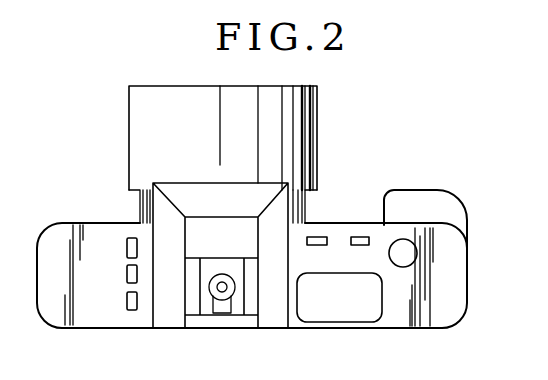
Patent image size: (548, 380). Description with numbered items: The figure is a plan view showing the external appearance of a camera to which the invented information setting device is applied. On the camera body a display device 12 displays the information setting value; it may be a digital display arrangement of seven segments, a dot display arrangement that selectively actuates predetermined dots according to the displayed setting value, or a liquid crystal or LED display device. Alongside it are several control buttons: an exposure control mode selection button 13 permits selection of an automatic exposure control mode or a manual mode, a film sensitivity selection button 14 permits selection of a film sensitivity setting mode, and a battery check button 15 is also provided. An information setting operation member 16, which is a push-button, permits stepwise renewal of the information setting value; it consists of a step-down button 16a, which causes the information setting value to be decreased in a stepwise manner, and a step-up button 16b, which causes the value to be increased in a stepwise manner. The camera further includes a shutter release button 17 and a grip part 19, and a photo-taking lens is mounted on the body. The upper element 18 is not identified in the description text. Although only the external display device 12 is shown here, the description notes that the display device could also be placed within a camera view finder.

The display device 12 is at (327, 322).
The exposure control mode selection button 13 is at (127, 246).
The film sensitivity selection button 14 is at (127, 273).
The battery check button 15 is at (130, 312).
The information setting operation member 16 is at (349, 184).
The step-down button 16a is at (321, 233).
The step-up button 16b is at (353, 203).
The shutter release button 17 is at (403, 267).
The flash unit 18 is at (317, 110).
The grip part 19 is at (444, 201).